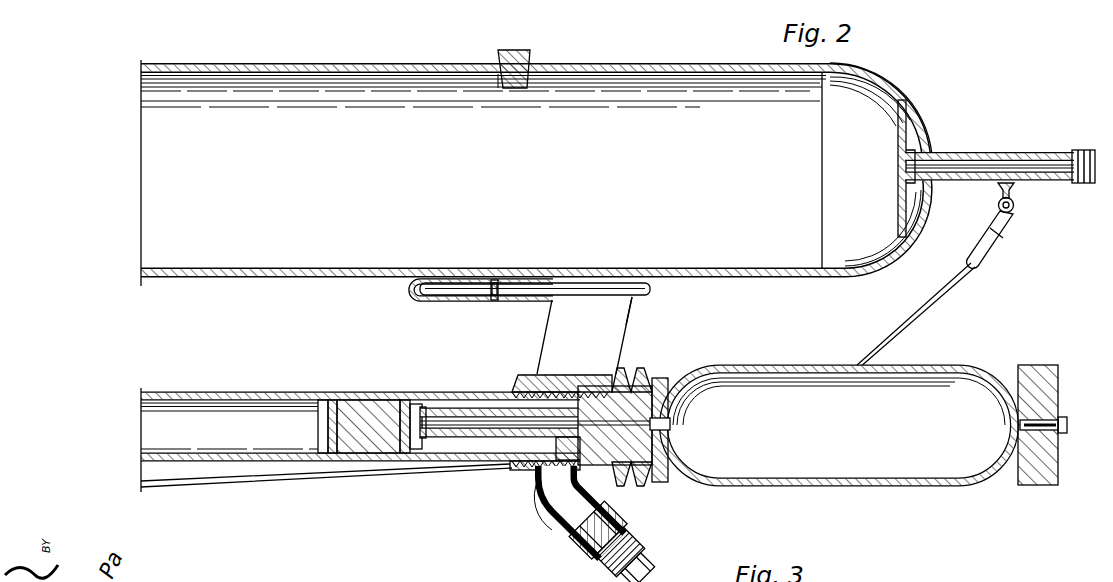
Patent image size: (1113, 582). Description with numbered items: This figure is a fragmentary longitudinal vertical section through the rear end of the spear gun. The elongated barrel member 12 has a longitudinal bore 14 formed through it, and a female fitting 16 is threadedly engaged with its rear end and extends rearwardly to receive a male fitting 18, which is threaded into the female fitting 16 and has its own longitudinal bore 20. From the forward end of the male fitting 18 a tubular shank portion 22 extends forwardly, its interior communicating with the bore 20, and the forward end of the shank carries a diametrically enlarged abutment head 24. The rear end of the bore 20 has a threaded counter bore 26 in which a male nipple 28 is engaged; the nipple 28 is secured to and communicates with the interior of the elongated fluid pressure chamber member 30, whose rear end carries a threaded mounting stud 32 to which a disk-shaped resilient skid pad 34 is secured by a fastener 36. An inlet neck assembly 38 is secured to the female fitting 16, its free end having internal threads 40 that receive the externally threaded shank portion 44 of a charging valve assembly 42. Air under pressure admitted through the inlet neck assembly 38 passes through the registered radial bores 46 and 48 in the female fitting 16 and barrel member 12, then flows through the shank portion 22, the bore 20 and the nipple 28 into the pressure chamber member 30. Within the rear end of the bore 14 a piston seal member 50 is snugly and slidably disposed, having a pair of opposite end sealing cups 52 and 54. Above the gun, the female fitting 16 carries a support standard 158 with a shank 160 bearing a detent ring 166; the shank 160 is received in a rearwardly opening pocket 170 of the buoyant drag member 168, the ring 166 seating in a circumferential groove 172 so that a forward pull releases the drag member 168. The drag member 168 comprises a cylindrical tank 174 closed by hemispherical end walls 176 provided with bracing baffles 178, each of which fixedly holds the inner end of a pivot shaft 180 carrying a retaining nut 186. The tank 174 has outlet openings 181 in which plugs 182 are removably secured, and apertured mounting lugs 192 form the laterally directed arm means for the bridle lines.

The barrel member 12 is at (385, 391).
The longitudinal bore 14 is at (185, 397).
The female fitting 16 is at (517, 472).
The male fitting 18 is at (640, 388).
The longitudinal bore 20 is at (592, 414).
The tubular shank portion 22 is at (477, 410).
The abutment head 24 is at (425, 444).
The threaded counter bore 26 is at (667, 434).
The male nipple 28 is at (663, 382).
The fluid pressure chamber member 30 is at (826, 481).
The threaded mounting stud 32 is at (1032, 419).
The skid pad 34 is at (1038, 483).
The fastener 36 is at (1063, 438).
The inlet neck assembly 38 is at (548, 523).
The internal threads 40 is at (578, 540).
The charging valve assembly 42 is at (600, 566).
The externally threaded shank portion 44 is at (600, 497).
The radial bore 46 is at (543, 490).
The radial bore 48 is at (578, 441).
The piston seal member 50 is at (318, 434).
The sealing cup 52 is at (331, 453).
The sealing cup 54 is at (408, 456).
The support standard 158 is at (628, 314).
The shank 160 is at (549, 286).
The detent ring 166 is at (494, 282).
The buoyant drag member 168 is at (653, 62).
The pocket 170 is at (448, 302).
The circumferential groove 172 is at (495, 302).
The tank 174 is at (200, 268).
The hemispherical end wall 176 is at (898, 103).
The bracing baffle 178 is at (897, 143).
The pivot shaft 180 is at (958, 162).
The outlet opening 181 is at (498, 78).
The plug 182 is at (532, 86).
The retaining nut 186 is at (1082, 152).
The apertured mounting lug 192 is at (1012, 189).